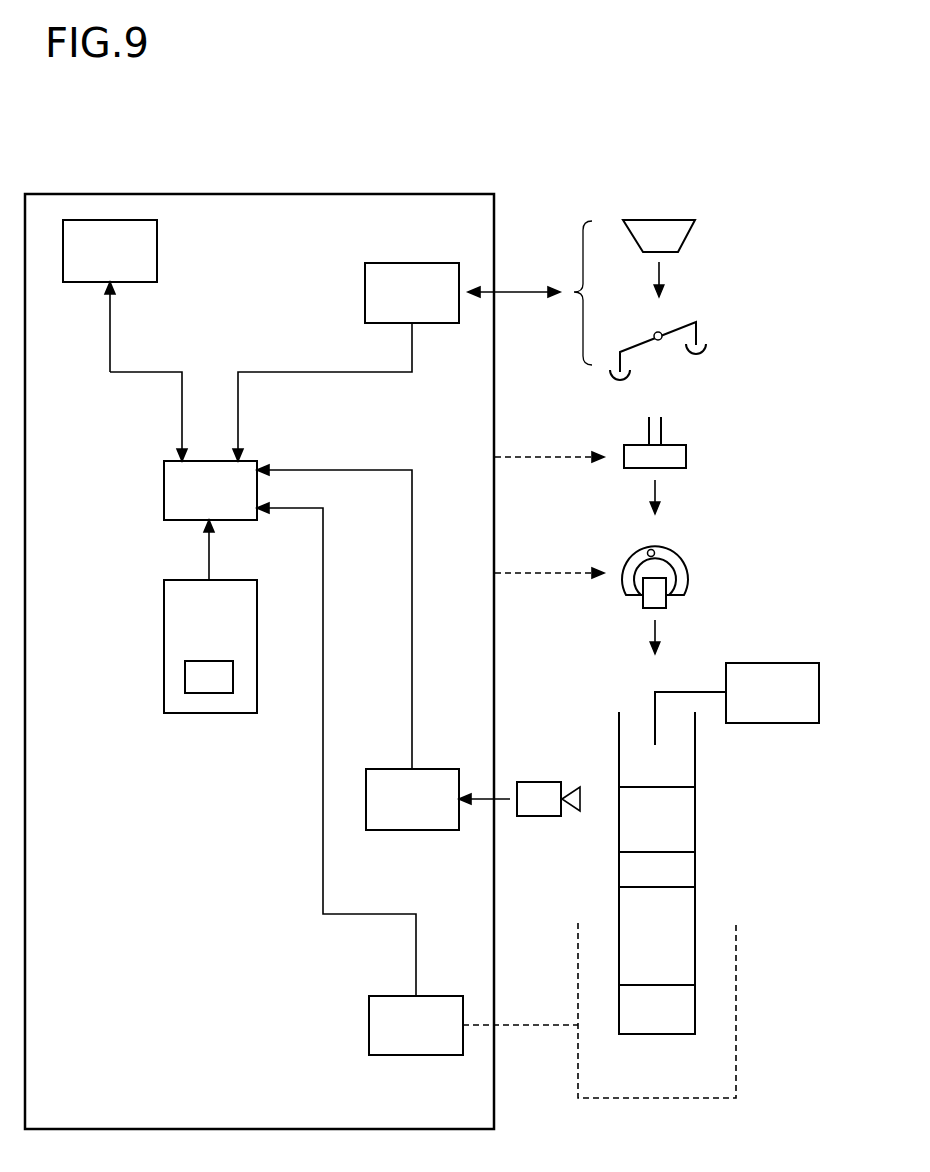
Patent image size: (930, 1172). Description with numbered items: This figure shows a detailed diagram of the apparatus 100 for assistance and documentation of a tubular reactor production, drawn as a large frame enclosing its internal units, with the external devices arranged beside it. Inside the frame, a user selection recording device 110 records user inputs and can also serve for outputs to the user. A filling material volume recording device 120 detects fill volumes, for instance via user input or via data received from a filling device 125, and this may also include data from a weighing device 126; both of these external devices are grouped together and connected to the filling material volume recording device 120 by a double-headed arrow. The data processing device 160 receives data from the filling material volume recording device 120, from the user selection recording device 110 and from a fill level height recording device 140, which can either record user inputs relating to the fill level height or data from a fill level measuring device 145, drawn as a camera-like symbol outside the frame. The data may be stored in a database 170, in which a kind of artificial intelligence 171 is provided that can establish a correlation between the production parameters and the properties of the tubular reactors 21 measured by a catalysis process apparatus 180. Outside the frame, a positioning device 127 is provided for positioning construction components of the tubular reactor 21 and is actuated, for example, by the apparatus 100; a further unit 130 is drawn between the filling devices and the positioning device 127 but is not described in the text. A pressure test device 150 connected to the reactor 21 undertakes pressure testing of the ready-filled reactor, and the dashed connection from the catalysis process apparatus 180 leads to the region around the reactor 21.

The apparatus 100 is at (445, 194).
The user selection recording device 110 is at (110, 251).
The filling material volume recording device 120 is at (412, 293).
The filling device 125 is at (690, 237).
The weighing device 126 is at (697, 335).
The positioning device 127 is at (688, 570).
The dispensing unit 130 is at (687, 457).
The fill level height recording device 140 is at (412, 799).
The fill level measuring device 145 is at (545, 817).
The pressure test device 150 is at (737, 704).
The data processing device 160 is at (210, 490).
The database 170 is at (210, 646).
The artificial intelligence 171 is at (209, 677).
The catalysis process apparatus 180 is at (416, 1025).
The tubular reactor 21 is at (697, 822).